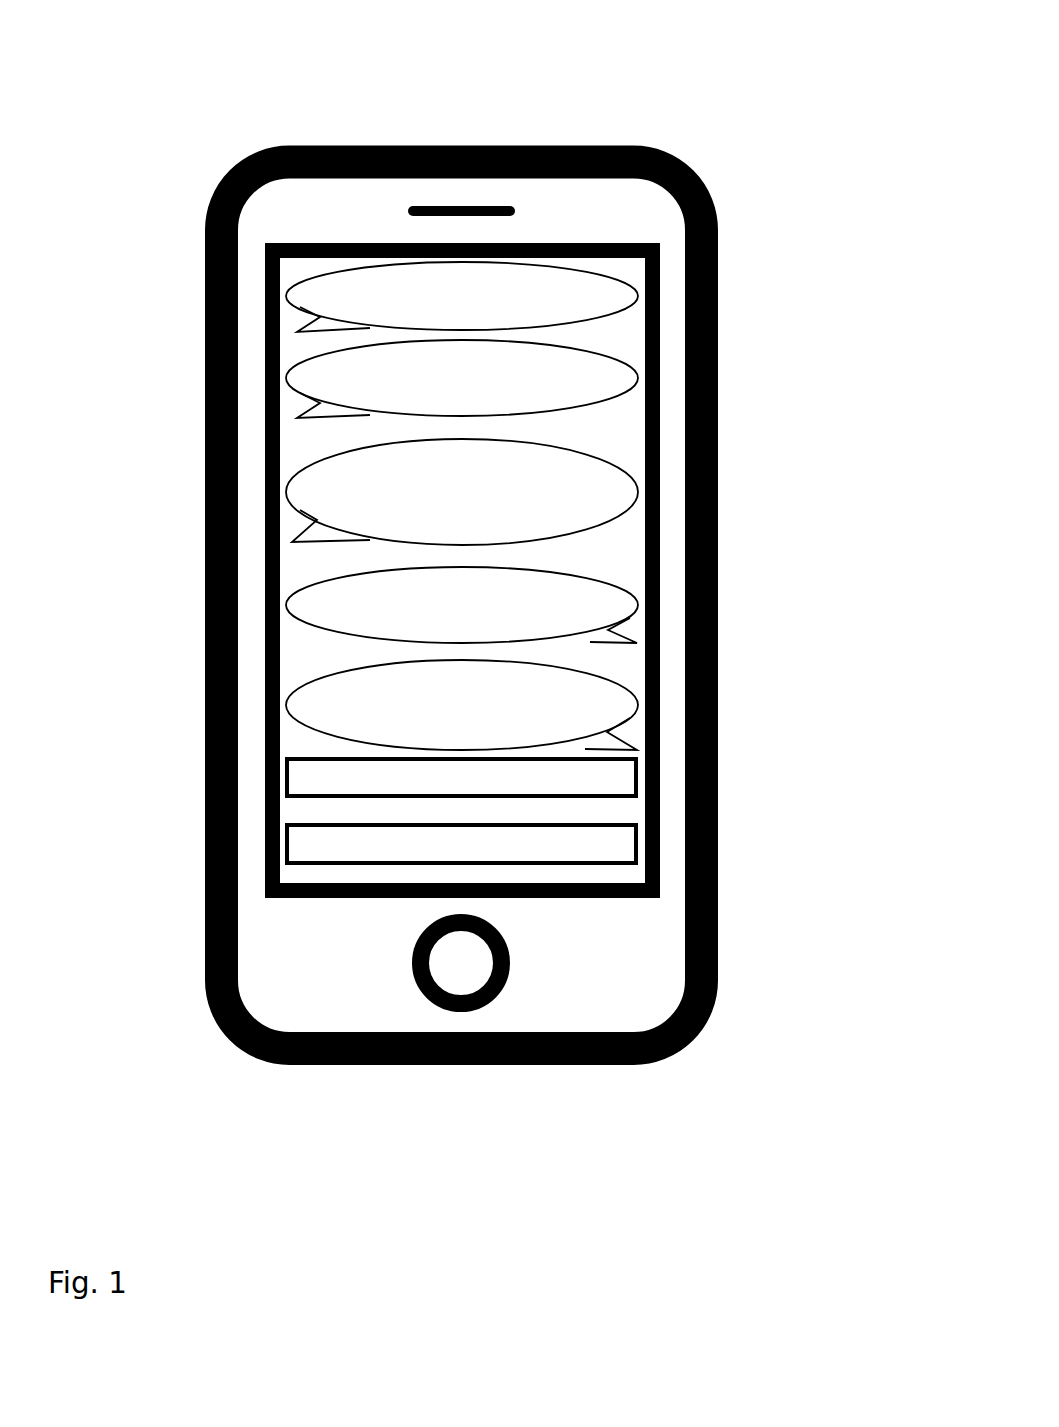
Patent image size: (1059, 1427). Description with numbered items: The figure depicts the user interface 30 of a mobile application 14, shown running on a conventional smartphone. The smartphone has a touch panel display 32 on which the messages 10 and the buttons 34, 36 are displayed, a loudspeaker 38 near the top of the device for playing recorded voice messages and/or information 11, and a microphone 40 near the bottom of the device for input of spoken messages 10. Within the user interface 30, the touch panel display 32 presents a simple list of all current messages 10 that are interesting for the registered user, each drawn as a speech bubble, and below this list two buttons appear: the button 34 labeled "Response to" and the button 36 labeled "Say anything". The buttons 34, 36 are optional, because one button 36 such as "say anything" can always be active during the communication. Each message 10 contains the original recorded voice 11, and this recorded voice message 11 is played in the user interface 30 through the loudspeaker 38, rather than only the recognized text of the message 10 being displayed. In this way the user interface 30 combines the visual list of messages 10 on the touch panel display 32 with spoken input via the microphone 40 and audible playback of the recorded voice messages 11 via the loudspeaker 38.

The mobile application 14 is at (724, 114).
The loudspeaker 38 is at (410, 206).
The user interface 30 is at (252, 340).
The touch panel display 32 is at (293, 452).
The messages 10 is at (640, 295).
The recorded voice message 11 is at (559, 506).
The button "Response to" 34 is at (640, 778).
The button "Say anything" 36 is at (640, 847).
The microphone 40 is at (412, 965).